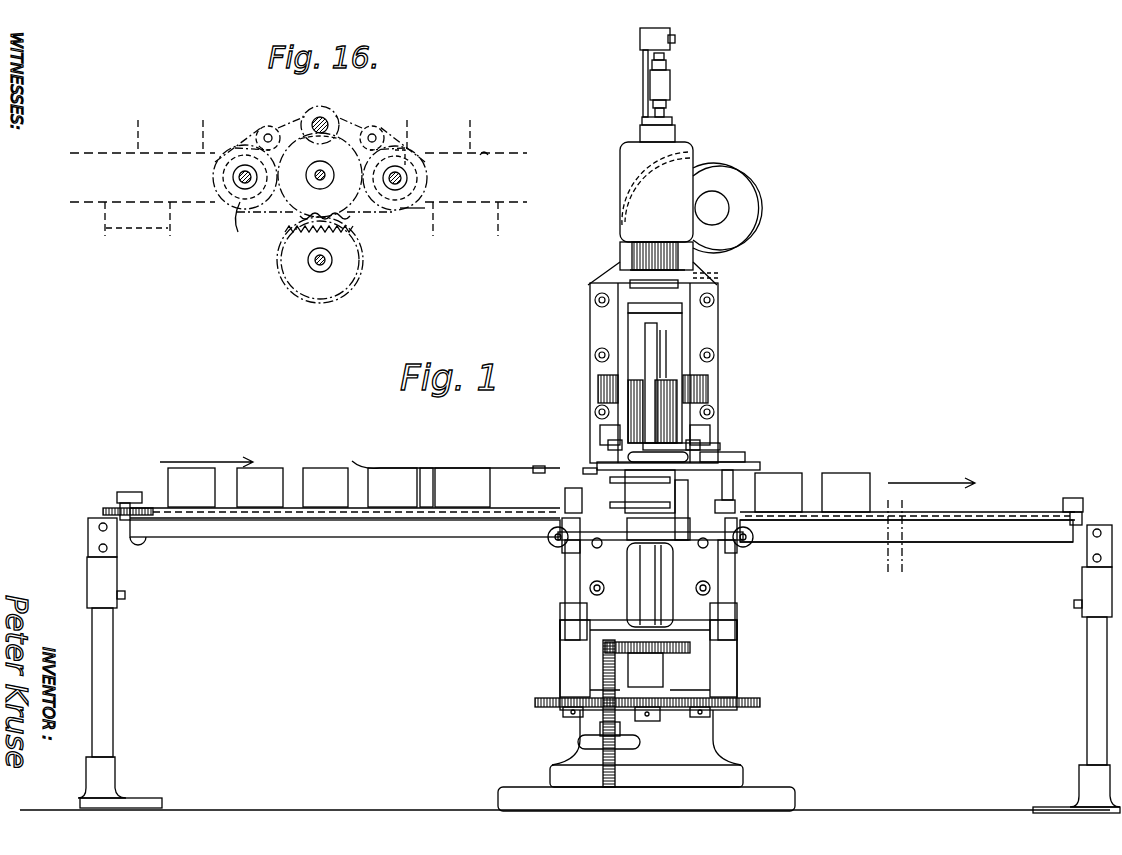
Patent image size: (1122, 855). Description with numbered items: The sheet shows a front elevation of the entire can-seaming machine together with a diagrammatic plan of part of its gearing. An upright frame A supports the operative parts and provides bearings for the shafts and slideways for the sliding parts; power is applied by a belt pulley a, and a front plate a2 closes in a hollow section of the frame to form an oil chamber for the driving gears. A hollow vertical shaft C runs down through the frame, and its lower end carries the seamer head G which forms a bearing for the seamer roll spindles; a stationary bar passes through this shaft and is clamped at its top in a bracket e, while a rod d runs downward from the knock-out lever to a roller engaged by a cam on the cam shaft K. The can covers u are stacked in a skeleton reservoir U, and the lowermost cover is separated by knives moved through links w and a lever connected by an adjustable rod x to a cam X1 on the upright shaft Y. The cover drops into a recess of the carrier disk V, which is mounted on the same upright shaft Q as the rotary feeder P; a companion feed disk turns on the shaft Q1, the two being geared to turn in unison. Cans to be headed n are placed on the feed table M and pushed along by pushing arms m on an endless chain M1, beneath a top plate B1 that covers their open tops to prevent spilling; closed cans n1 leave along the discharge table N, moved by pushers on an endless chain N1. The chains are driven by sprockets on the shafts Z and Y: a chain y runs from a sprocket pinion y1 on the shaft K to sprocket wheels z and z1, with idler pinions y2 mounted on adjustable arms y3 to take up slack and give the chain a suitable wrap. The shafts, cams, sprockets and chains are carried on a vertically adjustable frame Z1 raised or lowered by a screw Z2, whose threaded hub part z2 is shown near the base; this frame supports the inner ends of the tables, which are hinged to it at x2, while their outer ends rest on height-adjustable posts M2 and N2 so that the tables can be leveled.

In FIG. 1, the rod d is at (640, 91).
In FIG. 1, the bracket e is at (669, 76).
In FIG. 1, the belt pulley a is at (728, 182).
In FIG. 1, the front plate a2 is at (620, 190).
In FIG. 1, the frame A is at (646, 545).
In FIG. 1, the vertical shaft C is at (650, 303).
In FIG. 1, the skeleton guide or reservoir U is at (645, 343).
In FIG. 1, the can head or cover u is at (664, 354).
In FIG. 1, the gear J is at (598, 393).
In FIG. 1, the seamer head or disk G is at (600, 430).
In FIG. 1, the link w is at (608, 440).
In FIG. 1, the cam X1 is at (740, 458).
In FIG. 1, the carrier disk V is at (583, 468).
In FIG. 1, the rotary feeder P is at (627, 505).
In FIG. 1, the rod x is at (705, 505).
In FIG. 1, the hinge x2 is at (548, 546).
In FIG. 16, the shaft Z is at (238, 180).
In FIG. 1, the shaft Z is at (565, 578).
In FIG. 16, the upright shaft Y is at (402, 180).
In FIG. 1, the upright shaft Y is at (735, 578).
In FIG. 16, the upright shaft Q is at (320, 260).
In FIG. 1, the upright shaft Q is at (650, 595).
In FIG. 16, the upright shaft Q1 is at (320, 176).
In FIG. 1, the vertically adjustable frame Z1 is at (570, 674).
In FIG. 16, the sprocket wheel z is at (255, 228).
In FIG. 1, the sprocket wheel z is at (535, 704).
In FIG. 16, the sprocket wheel z1 is at (412, 219).
In FIG. 1, the sprocket wheel z1 is at (783, 707).
In FIG. 16, the sprocket pinion y1 is at (333, 118).
In FIG. 1, the sprocket pinion y1 is at (659, 720).
In FIG. 1, the screw Z2 is at (603, 765).
In FIG. 1, the disc z2 is at (640, 743).
In FIG. 1, the can to be headed n is at (356, 486).
In FIG. 1, the closed can n1 is at (812, 492).
In FIG. 1, the top plate B1 is at (488, 468).
In FIG. 1, the feed table M is at (284, 538).
In FIG. 16, the endless chain M1 is at (112, 180).
In FIG. 1, the post M2 is at (113, 660).
In FIG. 16, the pushing arm m is at (137, 229).
In FIG. 1, the discharge table N is at (907, 525).
In FIG. 16, the endless chain N1 is at (488, 183).
In FIG. 1, the endless chain N1 is at (850, 542).
In FIG. 1, the post N2 is at (1087, 680).
In FIG. 16, the cam shaft K is at (315, 114).
In FIG. 16, the chain y is at (365, 214).
In FIG. 16, the idler pinion y2 is at (262, 128).
In FIG. 16, the arm y3 is at (400, 150).